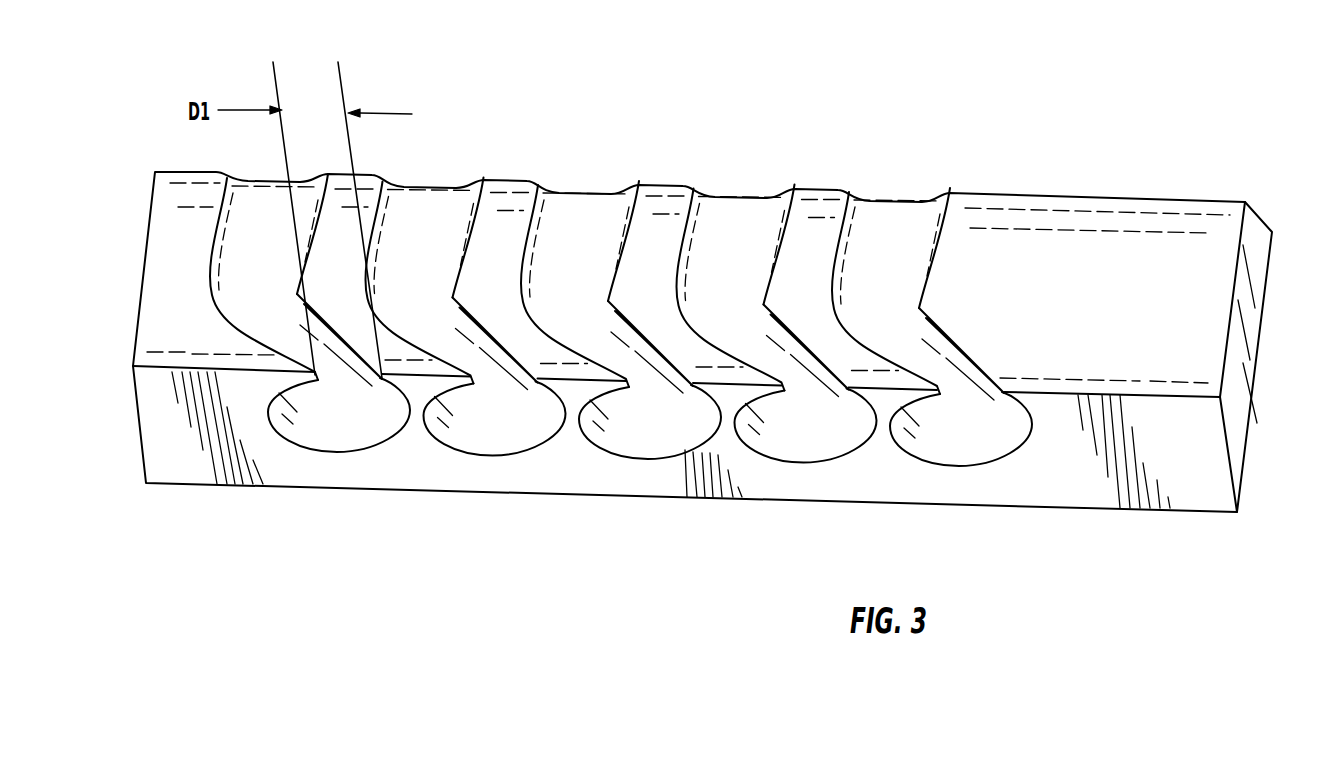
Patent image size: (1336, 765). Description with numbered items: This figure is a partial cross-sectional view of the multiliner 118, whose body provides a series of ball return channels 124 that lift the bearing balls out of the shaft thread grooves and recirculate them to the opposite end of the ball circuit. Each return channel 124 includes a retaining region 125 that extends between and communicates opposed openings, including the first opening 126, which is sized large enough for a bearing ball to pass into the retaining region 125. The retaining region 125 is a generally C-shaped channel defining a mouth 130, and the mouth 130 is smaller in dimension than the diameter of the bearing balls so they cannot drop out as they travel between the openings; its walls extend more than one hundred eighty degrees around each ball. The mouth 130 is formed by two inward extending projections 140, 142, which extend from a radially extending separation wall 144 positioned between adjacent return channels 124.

The multiliner 118 is at (1095, 220).
The ball return channel 124 is at (589, 266).
The retaining region 125 is at (656, 432).
The first opening 126 is at (623, 210).
The mouth 130 is at (655, 378).
The inward extending projection 140 is at (471, 381).
The inward extending projection 142 is at (546, 384).
The separation wall 144 is at (417, 410).